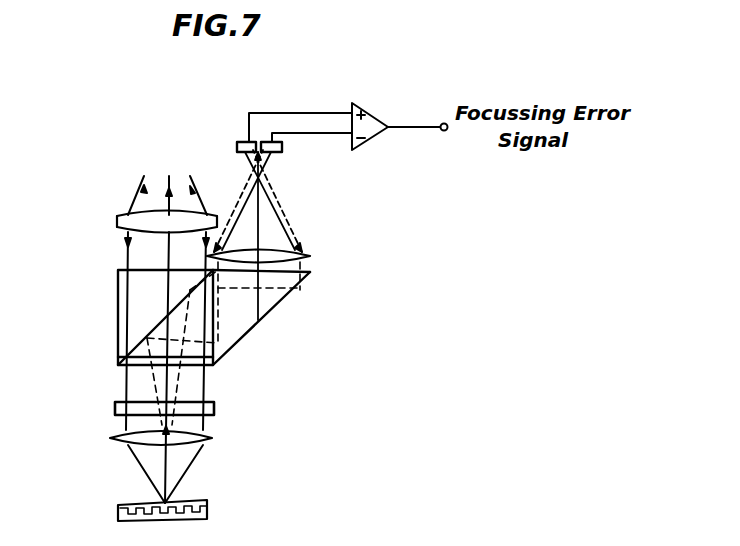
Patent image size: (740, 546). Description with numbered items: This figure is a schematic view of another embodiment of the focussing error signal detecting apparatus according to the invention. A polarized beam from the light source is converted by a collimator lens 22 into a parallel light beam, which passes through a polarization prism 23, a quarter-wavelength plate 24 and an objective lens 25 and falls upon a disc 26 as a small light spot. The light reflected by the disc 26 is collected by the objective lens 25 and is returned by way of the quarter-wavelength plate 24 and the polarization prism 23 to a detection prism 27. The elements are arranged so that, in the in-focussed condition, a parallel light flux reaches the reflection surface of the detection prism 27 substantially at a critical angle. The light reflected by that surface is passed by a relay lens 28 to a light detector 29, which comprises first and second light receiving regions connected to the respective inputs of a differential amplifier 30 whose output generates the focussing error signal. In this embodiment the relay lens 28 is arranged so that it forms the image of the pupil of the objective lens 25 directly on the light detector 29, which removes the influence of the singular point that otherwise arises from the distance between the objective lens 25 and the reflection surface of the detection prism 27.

The collimator lens 22 is at (117, 220).
The polarization prism 23 is at (118, 300).
The quarter-wavelength plate 24 is at (115, 405).
The objective lens 25 is at (110, 438).
The disc 26 is at (120, 505).
The detection prism 27 is at (291, 300).
The relay lens 28 is at (310, 256).
The light detector 29 is at (236, 136).
The differential amplifier 30 is at (372, 112).